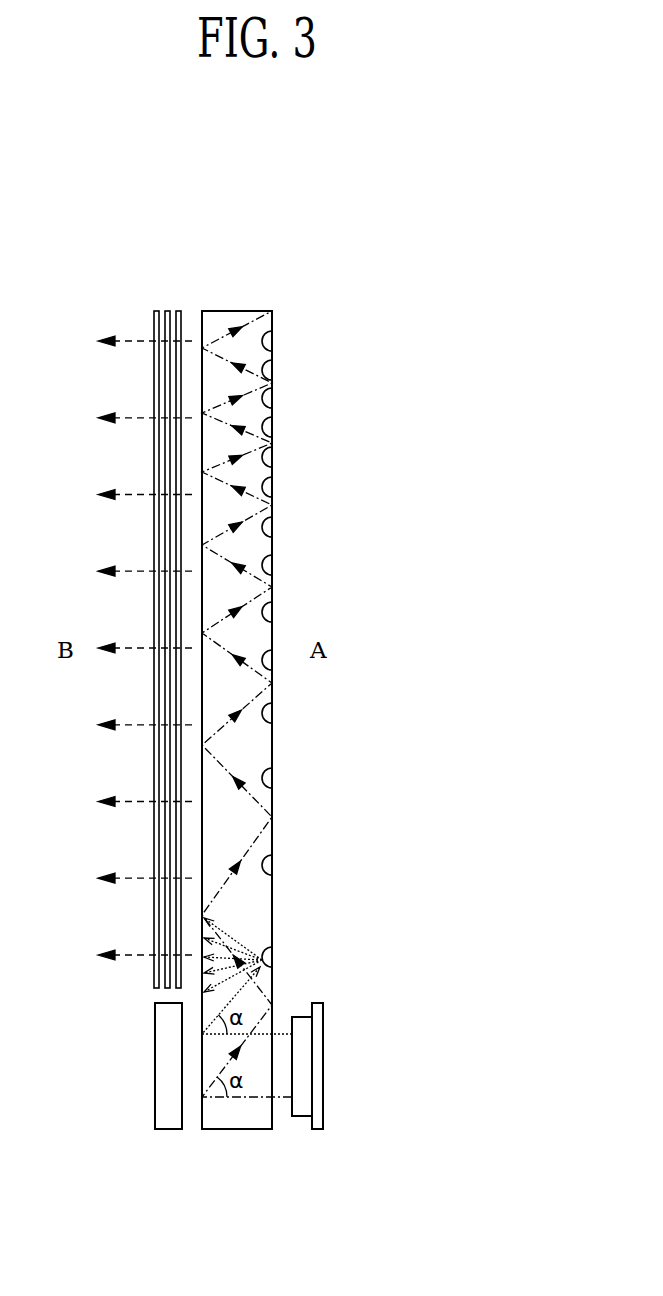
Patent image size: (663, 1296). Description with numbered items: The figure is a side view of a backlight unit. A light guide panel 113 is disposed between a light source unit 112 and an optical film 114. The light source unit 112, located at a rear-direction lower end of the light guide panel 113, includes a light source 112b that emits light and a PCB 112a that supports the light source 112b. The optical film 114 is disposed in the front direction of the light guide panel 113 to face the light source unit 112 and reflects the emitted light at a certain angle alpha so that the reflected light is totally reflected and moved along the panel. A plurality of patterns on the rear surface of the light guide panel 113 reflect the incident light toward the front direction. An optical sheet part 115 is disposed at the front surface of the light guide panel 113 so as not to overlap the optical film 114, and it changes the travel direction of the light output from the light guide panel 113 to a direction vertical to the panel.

The light source unit 112 is at (387, 1056).
The PCB 112a is at (325, 1053).
The light source 112b is at (300, 1027).
The light guide panel 113 is at (255, 311).
The optical film 114 is at (155, 1062).
The optical sheet part 115 is at (185, 307).